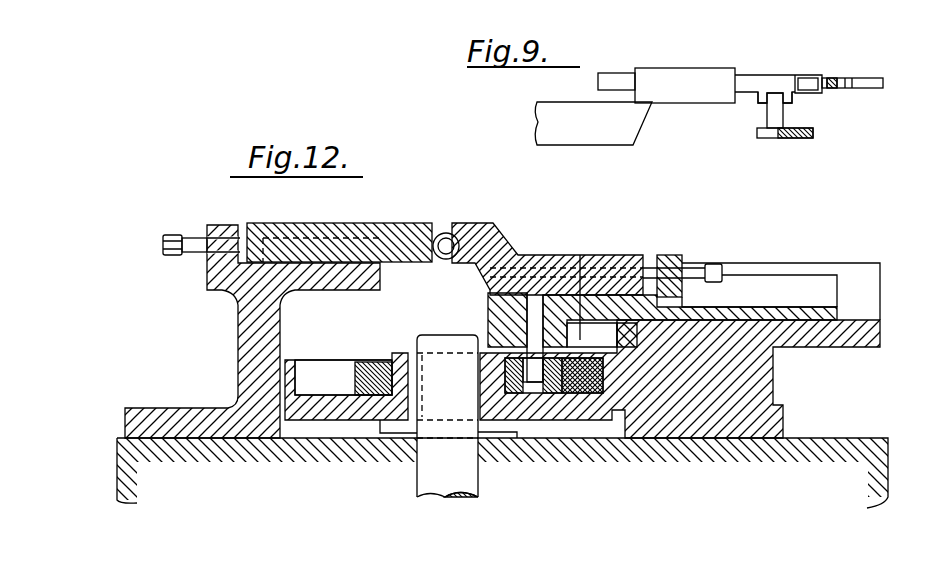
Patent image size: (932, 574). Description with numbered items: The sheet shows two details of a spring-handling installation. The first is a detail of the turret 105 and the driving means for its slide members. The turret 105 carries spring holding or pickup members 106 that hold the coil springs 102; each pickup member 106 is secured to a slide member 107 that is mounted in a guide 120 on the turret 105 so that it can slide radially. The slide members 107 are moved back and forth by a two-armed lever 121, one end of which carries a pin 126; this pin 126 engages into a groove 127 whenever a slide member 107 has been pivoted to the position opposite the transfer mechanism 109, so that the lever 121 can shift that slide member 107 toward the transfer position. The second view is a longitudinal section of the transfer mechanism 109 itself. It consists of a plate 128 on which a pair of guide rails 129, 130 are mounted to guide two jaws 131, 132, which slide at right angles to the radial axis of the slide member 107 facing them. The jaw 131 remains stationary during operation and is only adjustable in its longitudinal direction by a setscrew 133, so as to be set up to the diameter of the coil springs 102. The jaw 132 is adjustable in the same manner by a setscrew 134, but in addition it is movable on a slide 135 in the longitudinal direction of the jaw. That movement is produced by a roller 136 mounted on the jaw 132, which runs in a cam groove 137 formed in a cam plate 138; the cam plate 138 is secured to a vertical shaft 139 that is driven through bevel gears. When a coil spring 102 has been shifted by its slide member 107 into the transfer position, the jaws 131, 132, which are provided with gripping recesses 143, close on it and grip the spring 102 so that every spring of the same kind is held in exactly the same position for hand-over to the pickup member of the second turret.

In FIG. 9, the turret 105 is at (567, 135).
In FIG. 9, the spring holding or pickup member 106 is at (863, 80).
In FIG. 9, the slide member 107 is at (763, 75).
In FIG. 9, the guide 120 is at (683, 75).
In FIG. 9, the two-armed lever 121 is at (798, 136).
In FIG. 9, the pin 126 is at (768, 113).
In FIG. 9, the groove 127 is at (770, 92).
In FIG. 12, the coil spring 102 is at (442, 233).
In FIG. 12, the transfer mechanism 109 is at (340, 482).
In FIG. 12, the plate 128 is at (830, 437).
In FIG. 12, the guide rail 129 is at (257, 333).
In FIG. 12, the guide rail 130 is at (870, 334).
In FIG. 12, the jaw 131 is at (292, 228).
In FIG. 12, the jaw 132 is at (532, 255).
In FIG. 12, the setscrew 133 is at (172, 235).
In FIG. 12, the setscrew 134 is at (716, 264).
In FIG. 12, the slide 135 is at (603, 273).
In FIG. 12, the roller 136 is at (552, 395).
In FIG. 12, the cam groove 137 is at (322, 372).
In FIG. 12, the cam plate 138 is at (587, 395).
In FIG. 12, the vertical shaft 139 is at (425, 488).
In FIG. 12, the gripping recess 143 is at (460, 265).